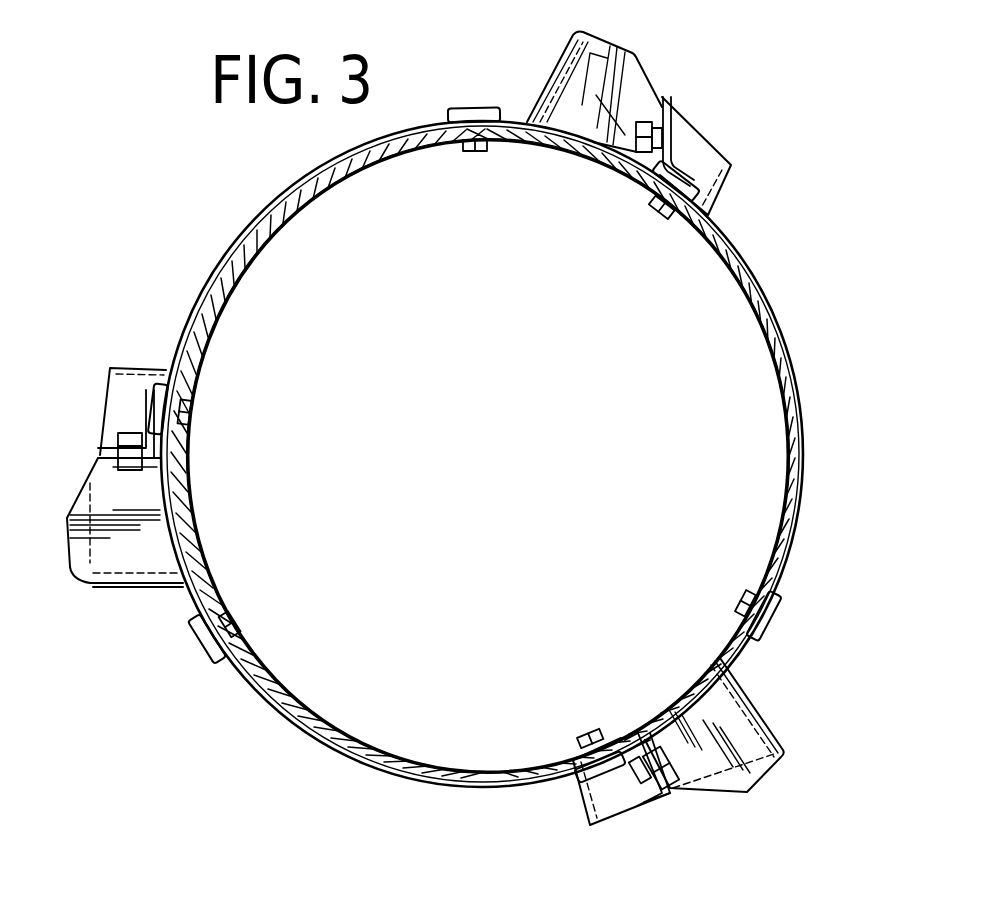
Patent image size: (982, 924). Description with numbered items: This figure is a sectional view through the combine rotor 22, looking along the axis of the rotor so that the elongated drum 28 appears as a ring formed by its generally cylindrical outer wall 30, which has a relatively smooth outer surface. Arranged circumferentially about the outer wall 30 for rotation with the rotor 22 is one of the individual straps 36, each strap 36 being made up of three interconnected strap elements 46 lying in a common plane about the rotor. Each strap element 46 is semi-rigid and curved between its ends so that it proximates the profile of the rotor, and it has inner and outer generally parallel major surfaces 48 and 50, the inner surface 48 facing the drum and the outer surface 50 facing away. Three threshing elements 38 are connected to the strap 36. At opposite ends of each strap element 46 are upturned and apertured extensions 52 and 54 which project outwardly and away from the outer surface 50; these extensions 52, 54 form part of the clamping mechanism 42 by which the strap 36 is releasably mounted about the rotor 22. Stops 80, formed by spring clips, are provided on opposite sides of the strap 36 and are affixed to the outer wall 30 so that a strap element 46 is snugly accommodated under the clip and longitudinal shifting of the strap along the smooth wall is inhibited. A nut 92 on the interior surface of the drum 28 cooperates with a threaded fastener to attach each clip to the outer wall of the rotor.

The combine rotor 22 is at (145, 306).
The elongated drum 28 is at (275, 215).
The outer wall 30 is at (752, 282).
The strap 36 is at (796, 353).
The threshing element 38 is at (548, 90).
The clamping mechanism 42 is at (674, 157).
The strap element 46 is at (284, 193).
The inner major surface 48 is at (245, 248).
The outer major surface 50 is at (213, 263).
The first upturned apertured extension 52 is at (655, 152).
The second upturned apertured extension 54 is at (660, 124).
The stop 80 is at (466, 106).
The nut 92 is at (476, 152).